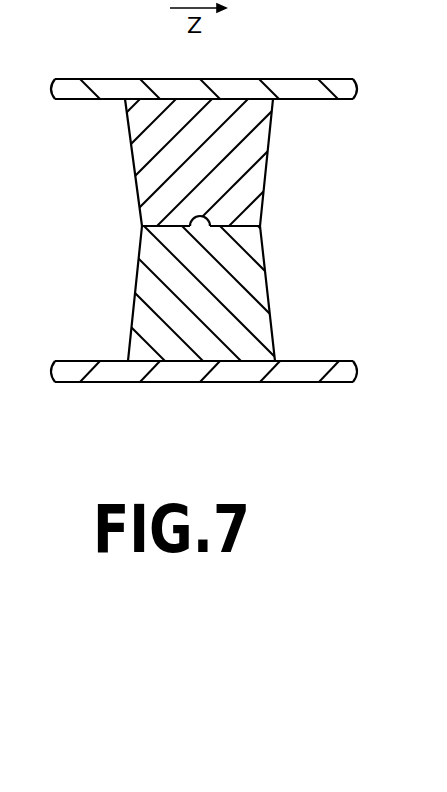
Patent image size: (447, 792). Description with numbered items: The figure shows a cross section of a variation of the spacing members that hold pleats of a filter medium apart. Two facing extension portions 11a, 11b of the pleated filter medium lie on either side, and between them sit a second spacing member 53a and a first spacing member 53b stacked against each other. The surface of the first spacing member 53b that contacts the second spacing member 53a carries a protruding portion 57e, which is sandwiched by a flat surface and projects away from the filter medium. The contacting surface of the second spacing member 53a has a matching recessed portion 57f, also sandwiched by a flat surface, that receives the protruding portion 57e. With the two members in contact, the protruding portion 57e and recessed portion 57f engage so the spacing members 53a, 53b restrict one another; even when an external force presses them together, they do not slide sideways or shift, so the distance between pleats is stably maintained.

The extension portion 11a is at (110, 90).
The extension portion 11b is at (129, 370).
The second spacing member 53a is at (150, 137).
The first spacing member 53b is at (150, 282).
The protruding portion 57e is at (197, 215).
The recessed portion 57f is at (196, 231).